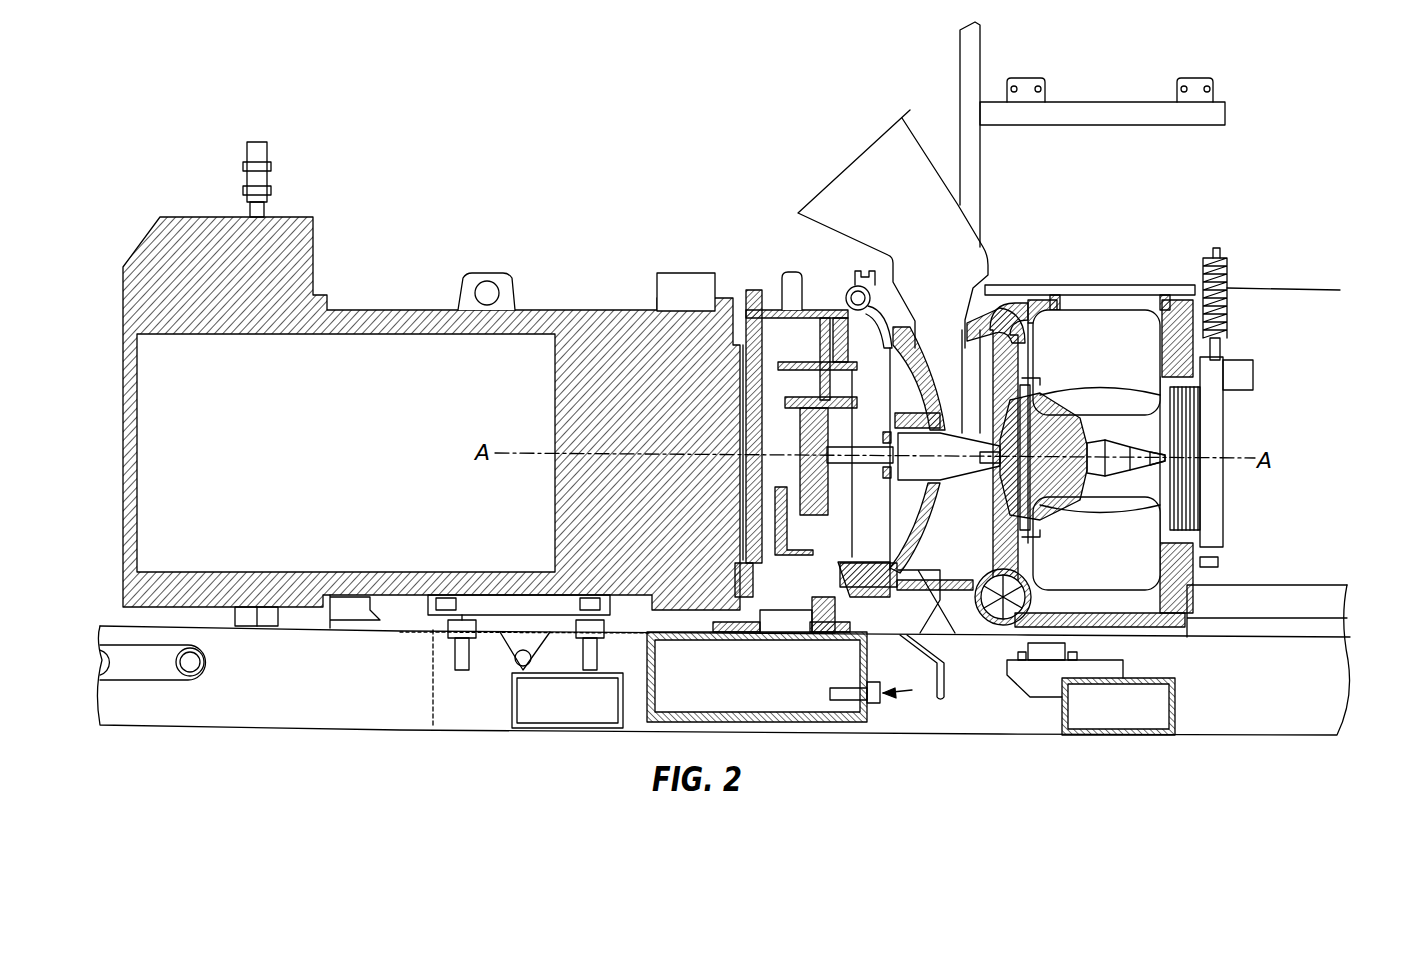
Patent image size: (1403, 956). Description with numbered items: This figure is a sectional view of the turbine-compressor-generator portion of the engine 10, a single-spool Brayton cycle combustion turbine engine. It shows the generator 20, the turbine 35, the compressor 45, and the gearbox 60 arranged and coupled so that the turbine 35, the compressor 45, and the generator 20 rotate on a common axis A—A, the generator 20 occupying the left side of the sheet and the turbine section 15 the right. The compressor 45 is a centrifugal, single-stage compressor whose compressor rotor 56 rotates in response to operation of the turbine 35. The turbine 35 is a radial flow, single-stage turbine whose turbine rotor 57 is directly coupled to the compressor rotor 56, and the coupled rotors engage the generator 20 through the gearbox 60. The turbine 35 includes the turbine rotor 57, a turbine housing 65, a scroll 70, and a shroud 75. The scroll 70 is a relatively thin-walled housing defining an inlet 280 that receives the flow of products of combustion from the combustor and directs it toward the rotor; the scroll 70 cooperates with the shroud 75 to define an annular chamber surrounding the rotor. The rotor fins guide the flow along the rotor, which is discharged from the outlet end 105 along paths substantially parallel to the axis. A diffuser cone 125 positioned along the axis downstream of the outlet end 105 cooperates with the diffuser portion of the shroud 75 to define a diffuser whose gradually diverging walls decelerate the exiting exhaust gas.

The engine 10 is at (563, 181).
The turbine assembly 15 is at (1069, 359).
The generator 20 is at (360, 310).
The turbine 35 is at (1228, 337).
The compressor 45 is at (1000, 295).
The compressor rotor 56 is at (973, 627).
The turbine rotor 57 is at (1072, 408).
The gearbox 60 is at (760, 272).
The turbine housing 65 is at (1180, 295).
The scroll 70 is at (1040, 352).
The shroud 75 is at (1155, 435).
The outlet end 105 is at (1091, 474).
The diffuser cone 125 is at (1160, 490).
The inlet 280 is at (1080, 298).